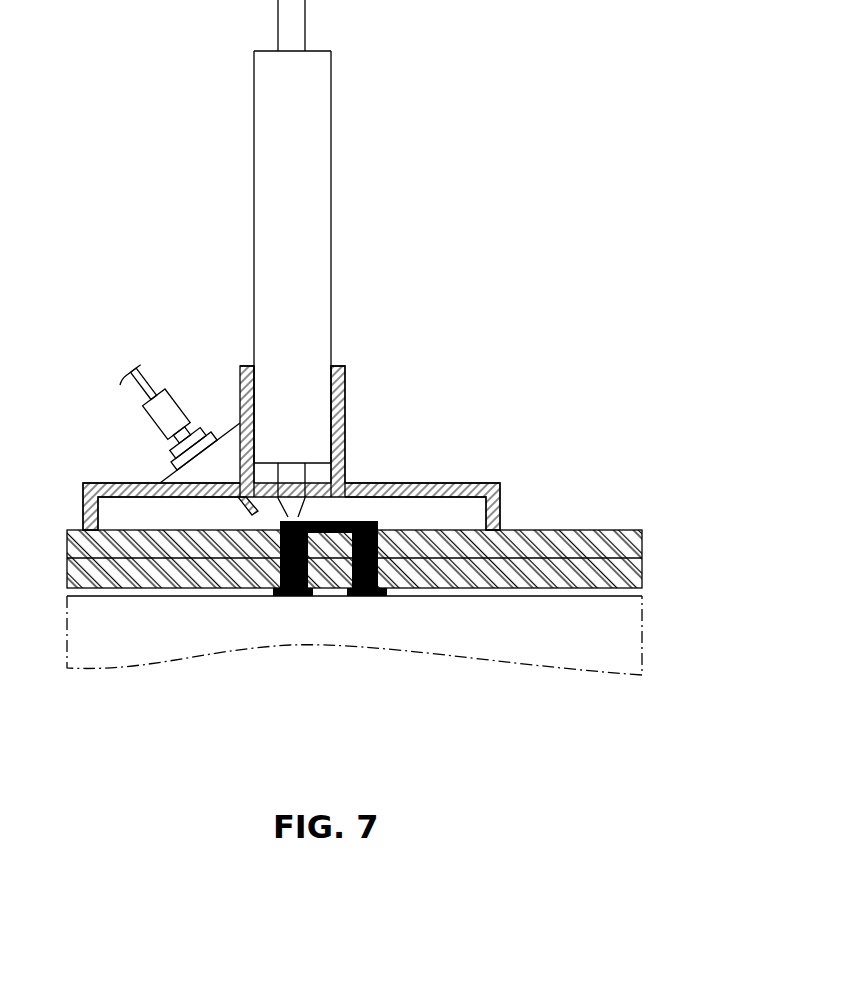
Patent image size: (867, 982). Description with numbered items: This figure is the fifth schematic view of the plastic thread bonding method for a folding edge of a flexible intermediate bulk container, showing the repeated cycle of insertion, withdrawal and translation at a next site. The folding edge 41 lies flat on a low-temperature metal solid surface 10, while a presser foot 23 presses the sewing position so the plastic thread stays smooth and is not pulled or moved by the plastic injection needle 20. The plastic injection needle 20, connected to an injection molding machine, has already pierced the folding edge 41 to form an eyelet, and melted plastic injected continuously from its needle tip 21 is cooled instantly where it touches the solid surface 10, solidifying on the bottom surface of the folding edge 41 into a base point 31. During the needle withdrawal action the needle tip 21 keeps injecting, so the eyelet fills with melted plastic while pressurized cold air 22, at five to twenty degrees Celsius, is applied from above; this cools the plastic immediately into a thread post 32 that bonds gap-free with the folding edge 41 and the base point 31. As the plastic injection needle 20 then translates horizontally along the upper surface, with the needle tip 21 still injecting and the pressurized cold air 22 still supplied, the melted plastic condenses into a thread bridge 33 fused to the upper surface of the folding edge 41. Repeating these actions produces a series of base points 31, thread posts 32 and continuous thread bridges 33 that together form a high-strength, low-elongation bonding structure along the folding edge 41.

The solid surface 10 is at (625, 626).
The plastic injection needle 20 is at (332, 275).
The needle tip 21 is at (305, 518).
The pressurized cold air 22 is at (153, 441).
The presser foot 23 is at (470, 483).
The base point 31 is at (268, 590).
The thread post 32 is at (278, 550).
The thread bridge 33 is at (338, 522).
The folding edge 41 is at (620, 530).